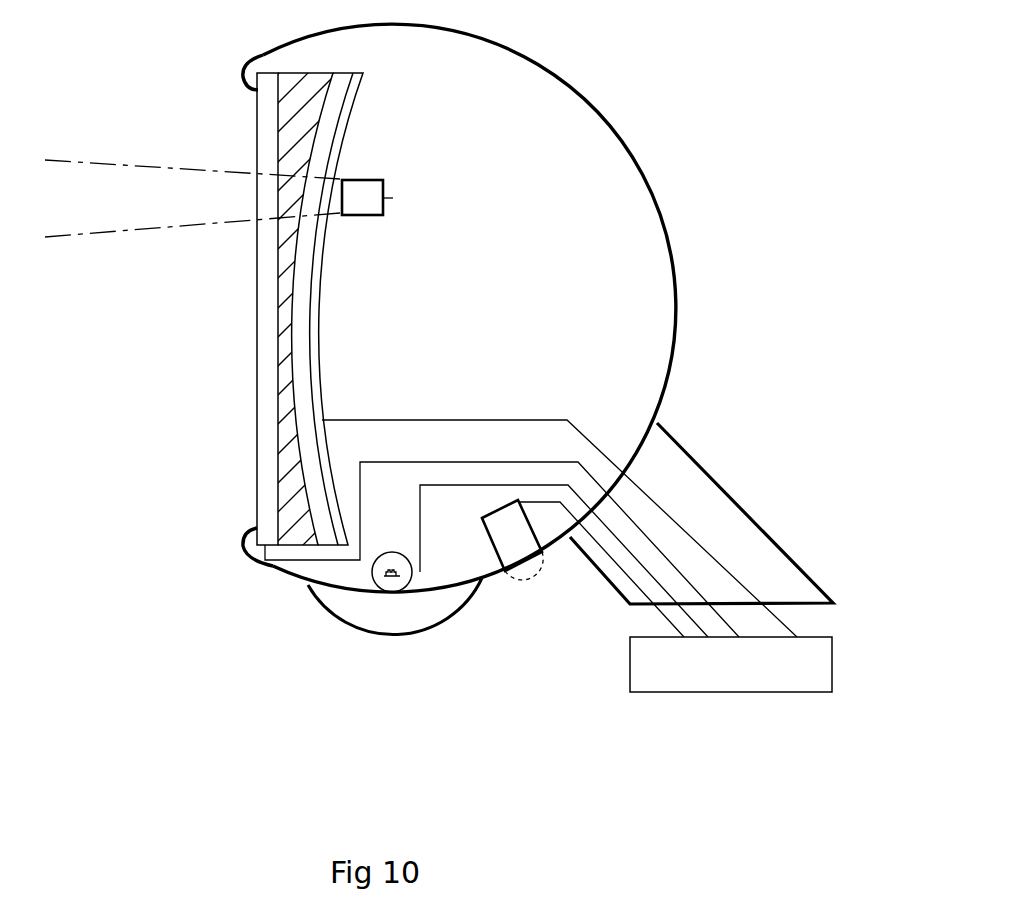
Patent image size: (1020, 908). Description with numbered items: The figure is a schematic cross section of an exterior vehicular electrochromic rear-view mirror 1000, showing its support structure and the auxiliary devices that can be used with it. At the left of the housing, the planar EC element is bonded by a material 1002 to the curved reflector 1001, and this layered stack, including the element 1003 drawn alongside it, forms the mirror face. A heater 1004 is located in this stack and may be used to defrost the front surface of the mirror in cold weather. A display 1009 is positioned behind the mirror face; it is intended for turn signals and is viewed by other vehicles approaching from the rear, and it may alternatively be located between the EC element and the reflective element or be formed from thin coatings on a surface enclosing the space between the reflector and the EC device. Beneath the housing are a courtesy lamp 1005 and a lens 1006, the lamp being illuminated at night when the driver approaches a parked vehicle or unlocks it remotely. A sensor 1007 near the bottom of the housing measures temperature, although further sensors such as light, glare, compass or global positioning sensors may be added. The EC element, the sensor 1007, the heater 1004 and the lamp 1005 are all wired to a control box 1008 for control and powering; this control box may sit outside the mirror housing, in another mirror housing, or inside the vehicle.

The mirror 1000 is at (600, 94).
The curved reflector 1001 is at (300, 322).
The bonding material 1002 is at (298, 442).
The wall 1003 is at (265, 373).
The heater 1004 is at (330, 500).
The courtesy lamp 1005 is at (372, 573).
The lens 1006 is at (325, 620).
The sensor 1007 is at (522, 590).
The control box 1008 is at (657, 713).
The display 1009 is at (405, 183).